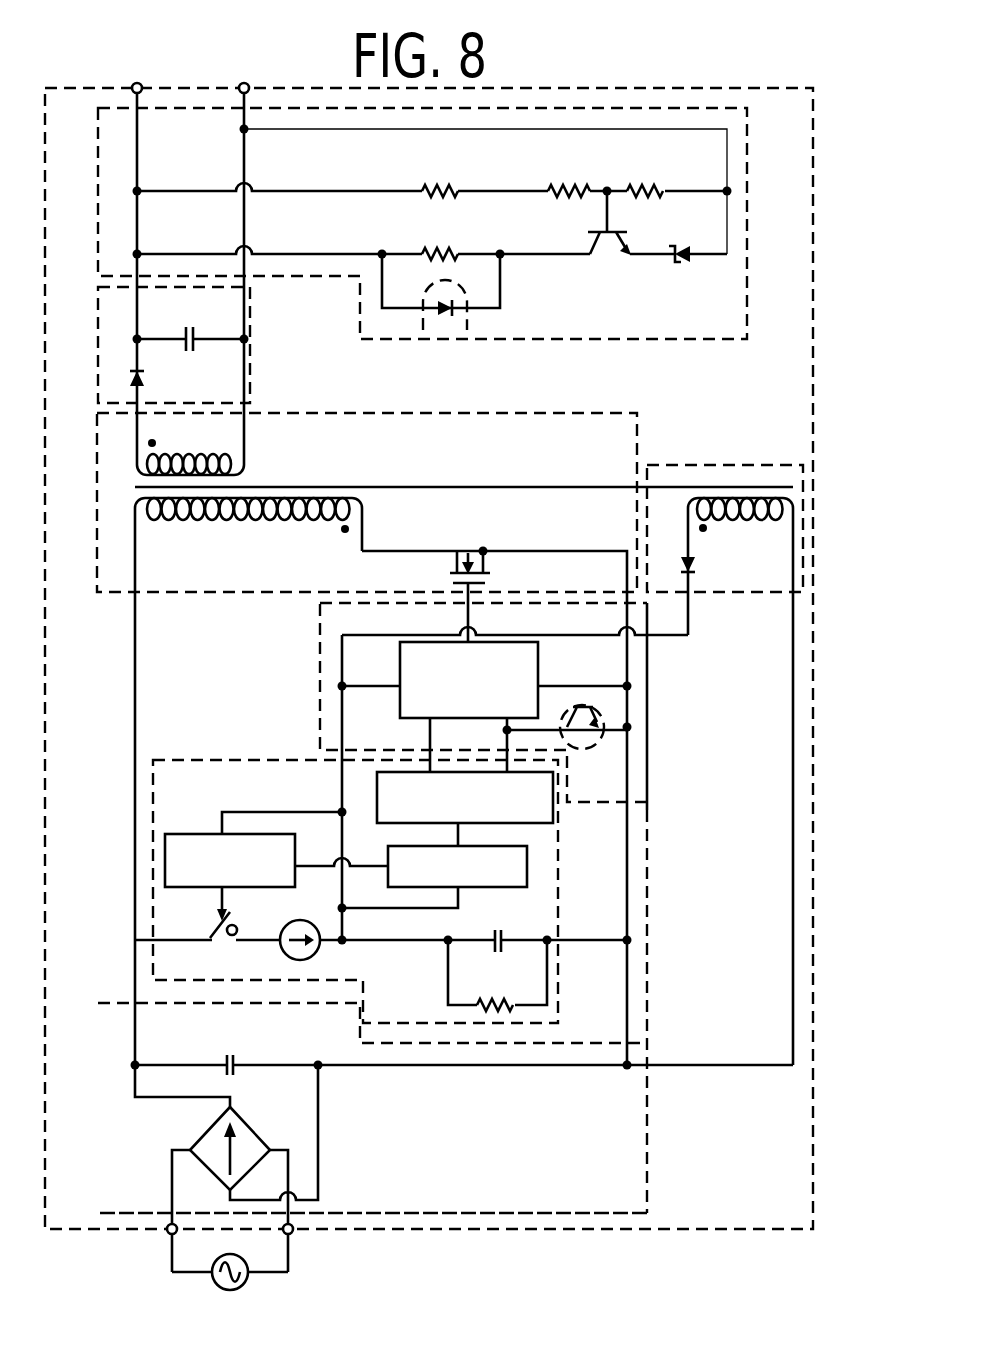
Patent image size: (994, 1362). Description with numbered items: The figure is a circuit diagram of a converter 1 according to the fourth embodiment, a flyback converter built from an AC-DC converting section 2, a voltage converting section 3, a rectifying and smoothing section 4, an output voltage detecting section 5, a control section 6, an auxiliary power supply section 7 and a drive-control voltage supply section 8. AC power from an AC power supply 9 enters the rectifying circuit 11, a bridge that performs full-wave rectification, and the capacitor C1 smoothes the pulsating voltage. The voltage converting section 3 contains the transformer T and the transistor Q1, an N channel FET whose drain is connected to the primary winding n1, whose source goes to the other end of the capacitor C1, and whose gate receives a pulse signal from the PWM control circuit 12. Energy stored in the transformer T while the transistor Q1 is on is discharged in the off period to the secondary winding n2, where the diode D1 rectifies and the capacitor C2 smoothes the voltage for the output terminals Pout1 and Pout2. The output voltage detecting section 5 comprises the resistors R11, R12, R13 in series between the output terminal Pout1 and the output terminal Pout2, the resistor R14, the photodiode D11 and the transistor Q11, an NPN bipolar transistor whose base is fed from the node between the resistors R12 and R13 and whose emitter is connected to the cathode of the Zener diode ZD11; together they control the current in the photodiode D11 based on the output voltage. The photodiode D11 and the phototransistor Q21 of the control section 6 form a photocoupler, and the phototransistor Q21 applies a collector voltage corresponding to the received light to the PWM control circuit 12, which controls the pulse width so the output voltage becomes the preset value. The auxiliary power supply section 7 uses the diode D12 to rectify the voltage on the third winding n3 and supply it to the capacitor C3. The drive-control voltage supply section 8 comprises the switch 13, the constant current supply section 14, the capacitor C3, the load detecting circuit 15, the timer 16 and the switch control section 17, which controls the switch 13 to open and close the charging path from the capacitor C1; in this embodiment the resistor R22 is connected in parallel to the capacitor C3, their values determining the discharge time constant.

The converter 1 is at (97, 88).
The AC-DC converting section 2 is at (98, 1044).
The voltage converting section 3 is at (97, 462).
The rectifying and smoothing section 4 is at (98, 329).
The output voltage detecting section 5 is at (98, 152).
The control section 6 is at (320, 662).
The auxiliary power supply section 7 is at (692, 464).
The drive-control voltage supply section 8 is at (160, 760).
The AC power supply 9 is at (218, 1285).
The rectifying circuit 11 is at (202, 1140).
The PWM control circuit 12 is at (400, 677).
The switch 13 is at (205, 932).
The constant current supply section 14 is at (282, 935).
The load detecting circuit 15 is at (377, 800).
The timer 16 is at (388, 858).
The switch control section 17 is at (185, 834).
The transformer T is at (122, 488).
The primary winding n1 is at (235, 524).
The secondary winding n2 is at (176, 453).
The third winding n3 is at (726, 781).
The transistor Q1 is at (470, 582).
The transistor Q11 is at (609, 242).
The phototransistor Q21 is at (582, 753).
The diode D1 is at (124, 377).
The photodiode D11 is at (441, 292).
The diode D12 is at (677, 571).
The Zener diode ZD11 is at (682, 284).
The resistor R11 is at (440, 169).
The resistor R12 is at (569, 169).
The resistor R13 is at (645, 169).
The resistor R14 is at (440, 232).
The resistor R22 is at (497, 975).
The capacitor C1 is at (226, 1048).
The capacitor C2 is at (191, 319).
The capacitor C3 is at (494, 922).
The output terminal Pout1 is at (132, 239).
The output terminal Pout2 is at (239, 239).